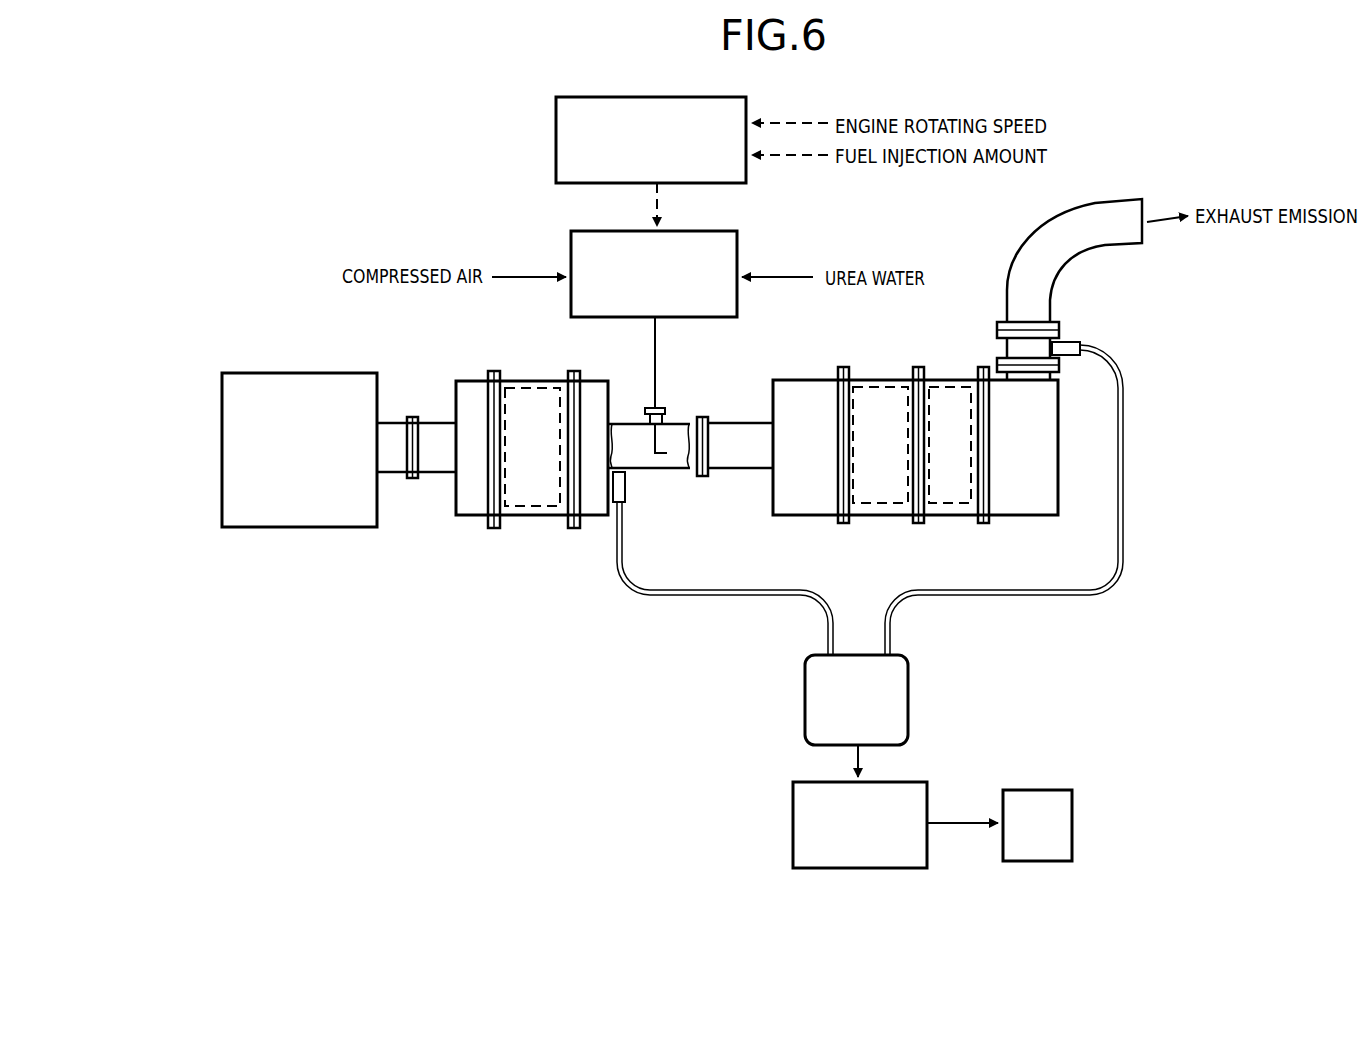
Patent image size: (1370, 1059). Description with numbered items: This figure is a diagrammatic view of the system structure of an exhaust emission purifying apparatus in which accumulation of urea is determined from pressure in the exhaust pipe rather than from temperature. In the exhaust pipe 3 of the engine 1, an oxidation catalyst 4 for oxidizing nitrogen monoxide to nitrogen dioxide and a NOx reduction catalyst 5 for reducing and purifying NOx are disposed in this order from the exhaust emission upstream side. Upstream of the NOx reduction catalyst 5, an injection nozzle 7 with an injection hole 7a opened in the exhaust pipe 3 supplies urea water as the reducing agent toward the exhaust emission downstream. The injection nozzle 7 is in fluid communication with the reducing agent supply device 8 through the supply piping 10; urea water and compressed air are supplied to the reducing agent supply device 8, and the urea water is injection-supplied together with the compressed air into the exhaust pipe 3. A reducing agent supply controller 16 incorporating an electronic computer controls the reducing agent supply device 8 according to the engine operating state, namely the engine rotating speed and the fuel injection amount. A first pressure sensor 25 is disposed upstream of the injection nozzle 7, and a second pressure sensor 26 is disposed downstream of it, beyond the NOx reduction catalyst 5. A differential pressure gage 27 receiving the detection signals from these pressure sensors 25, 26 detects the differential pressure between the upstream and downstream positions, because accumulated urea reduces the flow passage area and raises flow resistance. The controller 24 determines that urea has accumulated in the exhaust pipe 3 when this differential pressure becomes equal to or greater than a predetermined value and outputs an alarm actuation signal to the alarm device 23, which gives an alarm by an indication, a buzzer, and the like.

The engine 1 is at (298, 528).
The exhaust pipe 3 is at (447, 472).
The oxidation catalyst 4 is at (542, 507).
The NOx reduction catalyst 5 is at (893, 505).
The injection nozzle 7 is at (653, 455).
The injection hole 7a is at (662, 457).
The reducing agent supply device 8 is at (730, 230).
The supply piping 10 is at (655, 360).
The reducing agent supply controller 16 is at (556, 118).
The alarm device 23 is at (1055, 787).
The controller 24 is at (912, 779).
The first pressure sensor 25 is at (613, 510).
The second pressure sensor 26 is at (1073, 337).
The differential pressure gage 27 is at (910, 697).